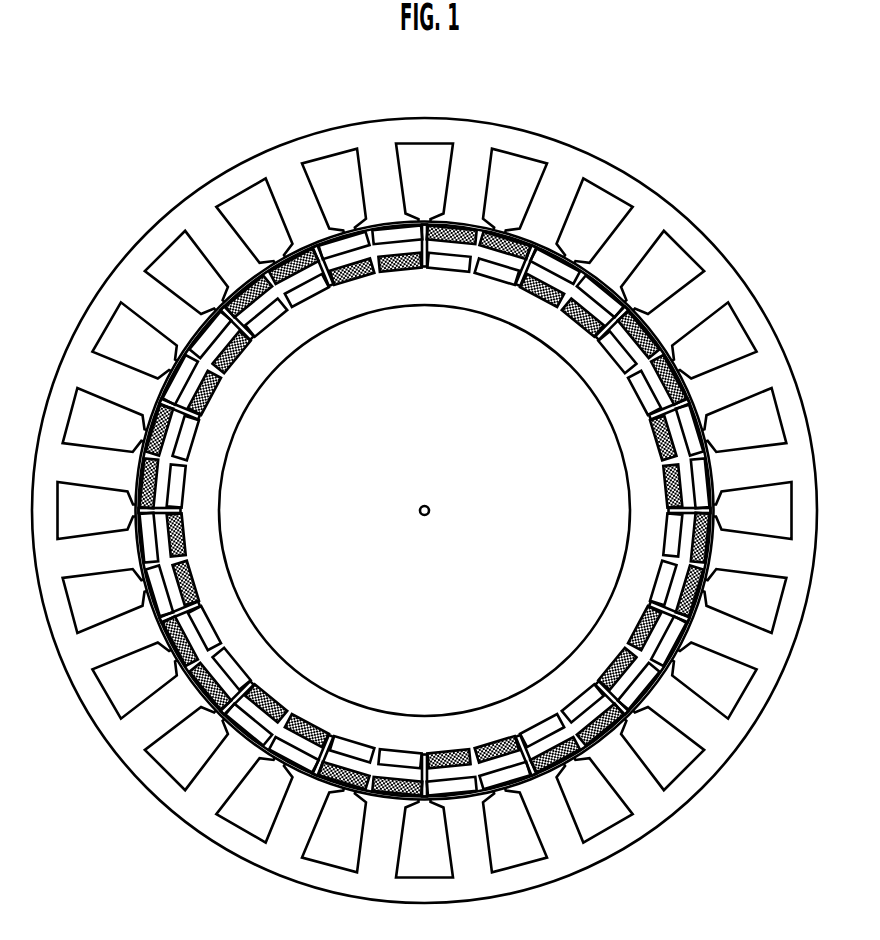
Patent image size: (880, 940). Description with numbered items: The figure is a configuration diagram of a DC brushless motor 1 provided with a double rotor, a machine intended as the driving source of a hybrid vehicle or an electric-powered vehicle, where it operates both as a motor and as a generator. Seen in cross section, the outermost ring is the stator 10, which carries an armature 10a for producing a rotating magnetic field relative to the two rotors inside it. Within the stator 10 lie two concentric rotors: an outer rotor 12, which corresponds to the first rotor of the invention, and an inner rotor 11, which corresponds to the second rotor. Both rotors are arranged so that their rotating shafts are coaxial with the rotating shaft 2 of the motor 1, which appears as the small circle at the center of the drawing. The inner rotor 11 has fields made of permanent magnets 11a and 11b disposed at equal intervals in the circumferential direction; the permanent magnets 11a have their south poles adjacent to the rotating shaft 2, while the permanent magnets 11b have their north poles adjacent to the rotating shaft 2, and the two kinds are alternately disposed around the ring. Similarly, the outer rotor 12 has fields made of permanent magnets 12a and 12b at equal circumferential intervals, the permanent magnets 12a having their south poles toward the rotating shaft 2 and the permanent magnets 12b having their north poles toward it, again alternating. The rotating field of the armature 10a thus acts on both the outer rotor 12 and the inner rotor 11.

The motor 1 is at (605, 102).
The rotating shaft 2 is at (429, 506).
The stator 10 is at (727, 283).
The armature 10a is at (647, 253).
The inner rotor 11 is at (460, 258).
The permanent magnet 11a is at (642, 393).
The permanent magnet 11b is at (573, 320).
The outer rotor 12 is at (388, 226).
The permanent magnet 12a is at (590, 292).
The permanent magnet 12b is at (680, 392).